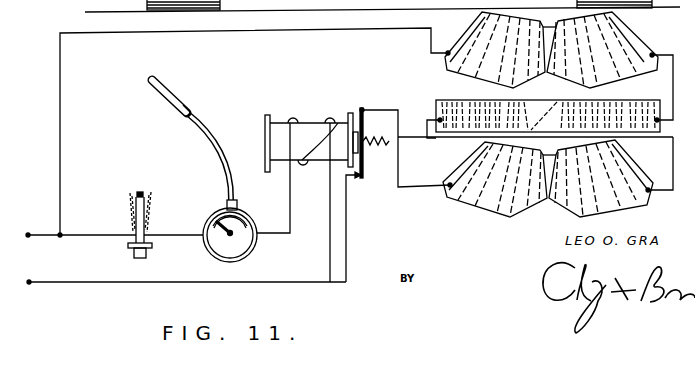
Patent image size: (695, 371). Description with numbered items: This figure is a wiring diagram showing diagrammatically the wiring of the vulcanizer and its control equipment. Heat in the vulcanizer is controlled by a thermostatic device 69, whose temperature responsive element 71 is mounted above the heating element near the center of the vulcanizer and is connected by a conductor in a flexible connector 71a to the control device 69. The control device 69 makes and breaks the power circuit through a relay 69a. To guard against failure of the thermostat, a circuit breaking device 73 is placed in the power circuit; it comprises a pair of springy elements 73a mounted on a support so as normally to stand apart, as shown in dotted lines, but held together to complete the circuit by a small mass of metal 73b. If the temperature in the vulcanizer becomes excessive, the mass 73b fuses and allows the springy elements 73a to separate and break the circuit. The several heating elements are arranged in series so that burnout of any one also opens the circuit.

The thermostatic device 69 is at (243, 212).
The relay 69a is at (338, 122).
The temperature responsive element 71 is at (175, 93).
The flexible connector 71a is at (210, 132).
The circuit breaking device 73 is at (142, 202).
The springy elements 73a is at (130, 205).
The fusible mass of metal 73b is at (140, 192).